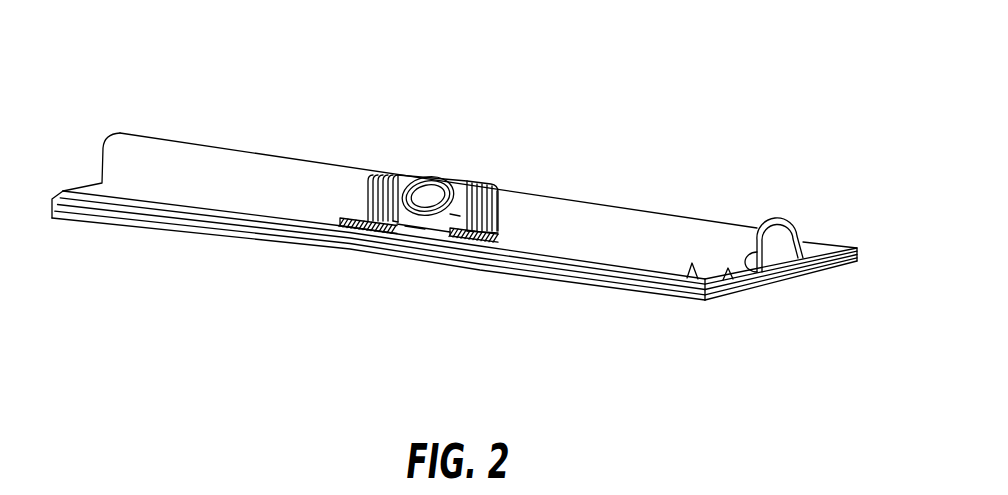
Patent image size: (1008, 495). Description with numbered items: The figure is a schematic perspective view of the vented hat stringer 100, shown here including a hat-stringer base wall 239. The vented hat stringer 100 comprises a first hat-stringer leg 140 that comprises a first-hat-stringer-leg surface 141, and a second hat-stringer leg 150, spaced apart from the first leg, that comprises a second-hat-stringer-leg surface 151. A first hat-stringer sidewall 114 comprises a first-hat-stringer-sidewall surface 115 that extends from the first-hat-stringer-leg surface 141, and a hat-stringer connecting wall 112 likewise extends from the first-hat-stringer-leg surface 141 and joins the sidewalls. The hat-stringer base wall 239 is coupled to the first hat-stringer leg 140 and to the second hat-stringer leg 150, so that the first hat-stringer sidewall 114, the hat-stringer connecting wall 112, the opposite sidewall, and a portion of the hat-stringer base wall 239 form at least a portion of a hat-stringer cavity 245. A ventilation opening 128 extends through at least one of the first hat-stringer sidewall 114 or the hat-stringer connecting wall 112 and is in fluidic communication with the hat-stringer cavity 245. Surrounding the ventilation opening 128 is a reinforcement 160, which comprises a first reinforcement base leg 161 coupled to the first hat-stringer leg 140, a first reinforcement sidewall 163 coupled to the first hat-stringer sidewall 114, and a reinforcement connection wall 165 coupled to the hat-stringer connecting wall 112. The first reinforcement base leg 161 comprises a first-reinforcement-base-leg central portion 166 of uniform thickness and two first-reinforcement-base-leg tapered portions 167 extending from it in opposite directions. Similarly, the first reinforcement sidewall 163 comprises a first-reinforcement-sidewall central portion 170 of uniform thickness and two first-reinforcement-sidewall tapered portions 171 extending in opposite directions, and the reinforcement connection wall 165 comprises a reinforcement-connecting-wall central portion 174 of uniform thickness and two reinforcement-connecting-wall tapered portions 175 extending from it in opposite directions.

The vented hat stringer 100 is at (177, 82).
The hat-stringer connecting wall 112 is at (227, 158).
The first hat-stringer sidewall 114 is at (105, 163).
The first-hat-stringer-sidewall surface 115 is at (760, 293).
The ventilation opening 128 is at (433, 177).
The first hat-stringer leg 140 is at (737, 283).
The first-hat-stringer-leg surface 141 is at (689, 290).
The second hat-stringer leg 150 is at (827, 270).
The second-hat-stringer-leg surface 151 is at (840, 263).
The reinforcement 160 is at (415, 168).
The first reinforcement base leg 161 is at (416, 238).
The first reinforcement sidewall 163 is at (395, 213).
The reinforcement connection wall 165 is at (473, 182).
The first-reinforcement-base-leg central portion 166 is at (372, 238).
The first-reinforcement-base-leg tapered portions 167 is at (340, 226).
The first-reinforcement-sidewall central portion 170 is at (455, 217).
The first-reinforcement-sidewall tapered portions 171 is at (368, 192).
The reinforcement-connecting-wall central portion 174 is at (425, 173).
The reinforcement-connecting-wall tapered portions 175 is at (372, 172).
The hat-stringer base wall 239 is at (722, 300).
The hat-stringer cavity 245 is at (777, 244).